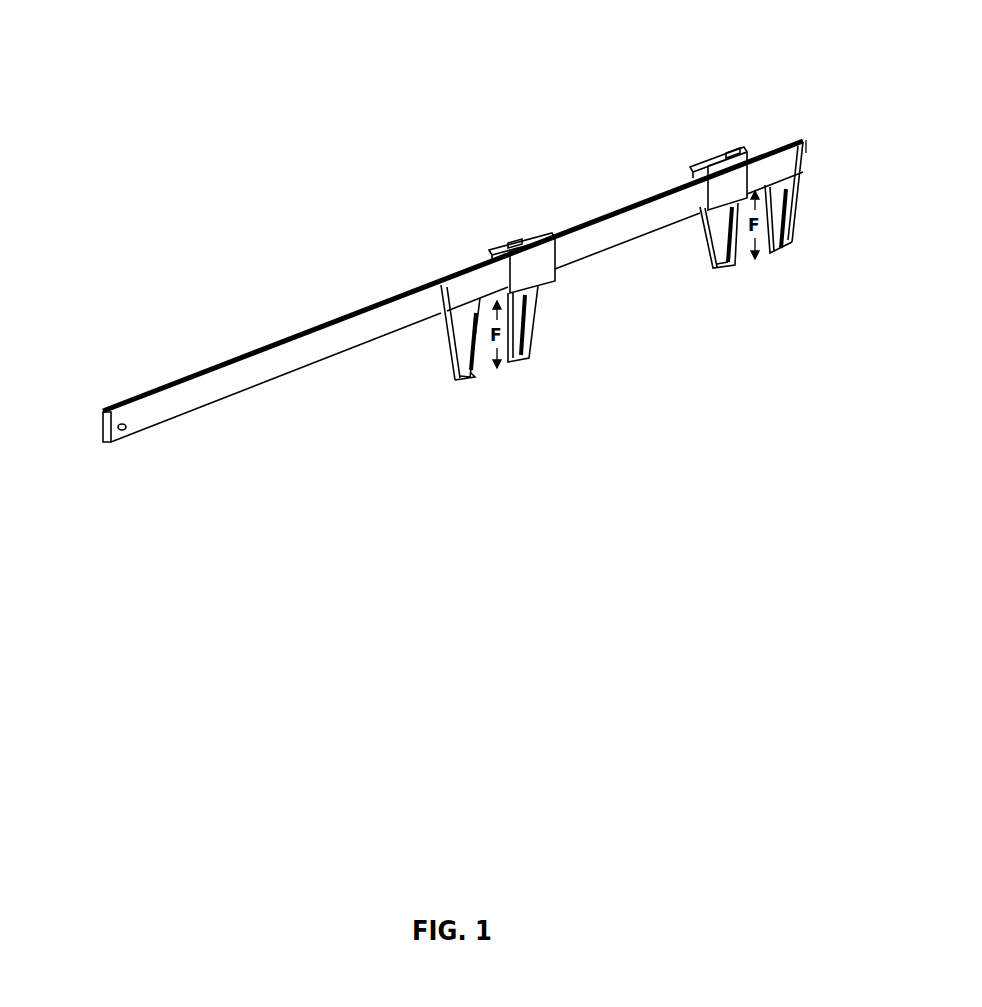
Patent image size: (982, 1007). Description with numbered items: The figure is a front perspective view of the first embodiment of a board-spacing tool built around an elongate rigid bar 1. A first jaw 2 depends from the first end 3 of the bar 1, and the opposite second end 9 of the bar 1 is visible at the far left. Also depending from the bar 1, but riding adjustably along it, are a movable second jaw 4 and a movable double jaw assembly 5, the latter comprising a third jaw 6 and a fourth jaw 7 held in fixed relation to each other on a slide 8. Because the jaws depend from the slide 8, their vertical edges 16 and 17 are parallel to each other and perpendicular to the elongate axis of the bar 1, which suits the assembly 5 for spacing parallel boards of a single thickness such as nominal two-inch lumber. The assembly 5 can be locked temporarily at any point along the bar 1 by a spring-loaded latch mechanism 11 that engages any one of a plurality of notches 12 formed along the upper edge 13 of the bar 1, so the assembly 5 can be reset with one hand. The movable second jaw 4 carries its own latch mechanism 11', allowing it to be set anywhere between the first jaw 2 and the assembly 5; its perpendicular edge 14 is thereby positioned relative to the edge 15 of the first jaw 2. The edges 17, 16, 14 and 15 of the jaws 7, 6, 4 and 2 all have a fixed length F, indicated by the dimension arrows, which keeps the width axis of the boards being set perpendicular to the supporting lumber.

The rigid bar 1 is at (218, 390).
The first jaw 2 is at (778, 185).
The first end 3 is at (804, 146).
The movable second jaw 4 is at (727, 147).
The movable double jaw assembly 5 is at (528, 226).
The third jaw 6 is at (525, 330).
The fourth jaw 7 is at (455, 347).
The slide 8 is at (453, 303).
The second end 9 is at (103, 436).
The spring-loaded latch mechanism 11 is at (523, 194).
The latch mechanism 11' is at (695, 104).
The notches 12 is at (297, 339).
The upper edge 13 is at (308, 333).
The perpendicular edge 14 is at (739, 225).
The edge 15 is at (780, 240).
The vertical edge 16 is at (527, 357).
The vertical edge 17 is at (476, 368).